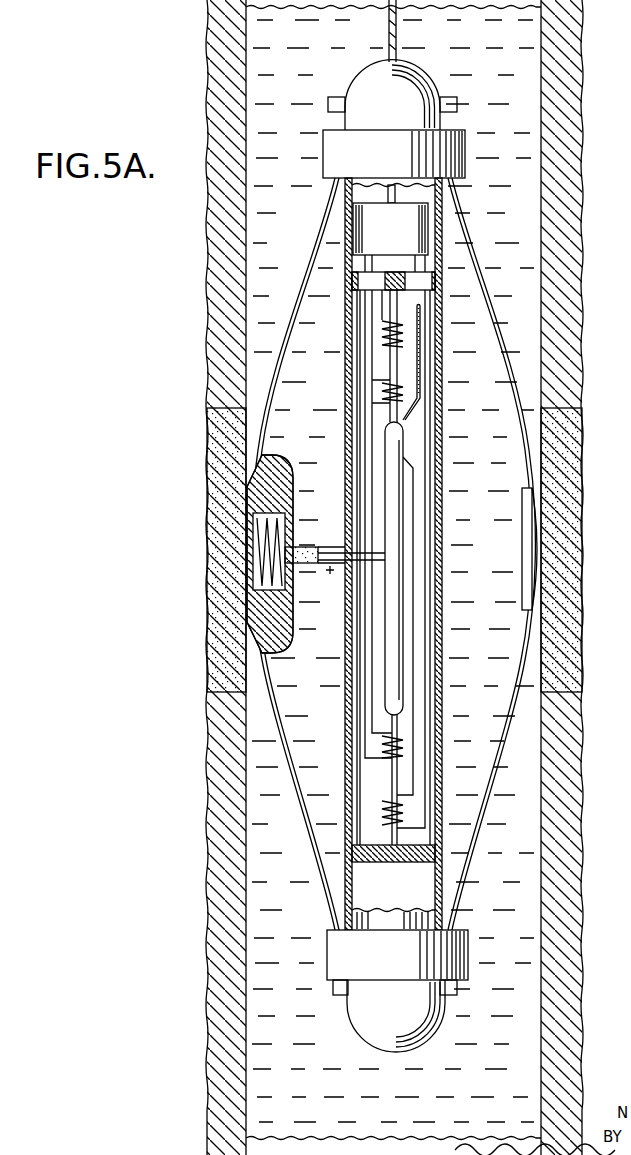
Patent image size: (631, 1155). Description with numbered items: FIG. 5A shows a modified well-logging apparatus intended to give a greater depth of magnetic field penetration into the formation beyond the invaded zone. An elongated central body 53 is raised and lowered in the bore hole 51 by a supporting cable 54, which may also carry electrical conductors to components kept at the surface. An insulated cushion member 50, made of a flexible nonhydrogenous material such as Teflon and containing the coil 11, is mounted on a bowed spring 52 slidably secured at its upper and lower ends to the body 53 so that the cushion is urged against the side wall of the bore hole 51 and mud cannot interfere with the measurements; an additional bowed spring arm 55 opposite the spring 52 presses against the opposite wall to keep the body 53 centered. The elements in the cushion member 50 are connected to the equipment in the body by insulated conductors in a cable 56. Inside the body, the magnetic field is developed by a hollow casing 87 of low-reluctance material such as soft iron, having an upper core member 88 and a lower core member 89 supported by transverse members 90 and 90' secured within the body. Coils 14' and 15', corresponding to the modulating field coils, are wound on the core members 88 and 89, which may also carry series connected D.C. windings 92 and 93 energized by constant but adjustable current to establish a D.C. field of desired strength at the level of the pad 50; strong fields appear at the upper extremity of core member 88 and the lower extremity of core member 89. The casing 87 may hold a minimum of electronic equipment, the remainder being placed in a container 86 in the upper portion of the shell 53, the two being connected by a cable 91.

The bore hole 51 is at (247, 75).
The cable 54 is at (398, 36).
The elongated central body 53 is at (441, 625).
The bowed spring 52 is at (301, 301).
The bowed spring arm 55 is at (483, 294).
The insulated cushion member 50 is at (293, 482).
The coil 11 is at (277, 530).
The cable 56 is at (330, 575).
The container 86 is at (390, 220).
The transverse member 90 is at (412, 286).
The transverse member 90' is at (393, 872).
The cable 91 is at (422, 338).
The upper core member 88 is at (390, 362).
The winding 92 is at (382, 328).
The coil 14' is at (352, 392).
The hollow casing 87 is at (398, 527).
The lower core member 89 is at (397, 727).
The coil 15' is at (433, 748).
The winding 93 is at (385, 813).